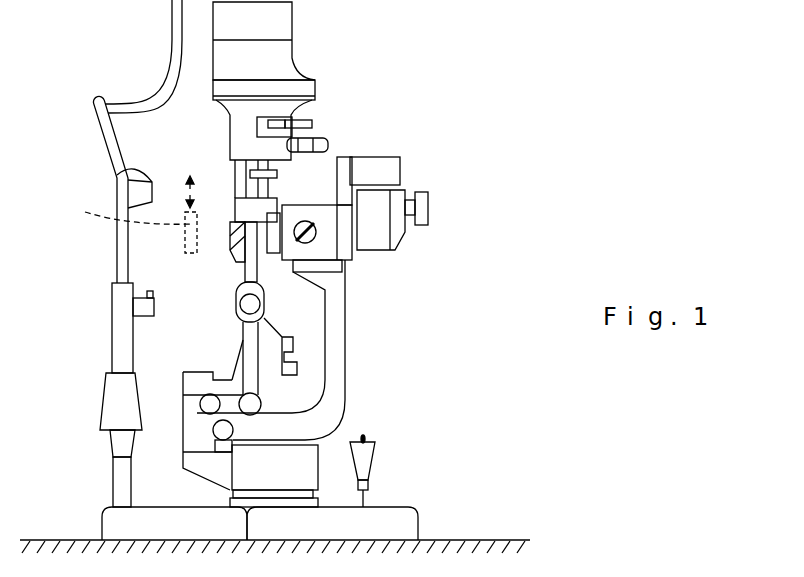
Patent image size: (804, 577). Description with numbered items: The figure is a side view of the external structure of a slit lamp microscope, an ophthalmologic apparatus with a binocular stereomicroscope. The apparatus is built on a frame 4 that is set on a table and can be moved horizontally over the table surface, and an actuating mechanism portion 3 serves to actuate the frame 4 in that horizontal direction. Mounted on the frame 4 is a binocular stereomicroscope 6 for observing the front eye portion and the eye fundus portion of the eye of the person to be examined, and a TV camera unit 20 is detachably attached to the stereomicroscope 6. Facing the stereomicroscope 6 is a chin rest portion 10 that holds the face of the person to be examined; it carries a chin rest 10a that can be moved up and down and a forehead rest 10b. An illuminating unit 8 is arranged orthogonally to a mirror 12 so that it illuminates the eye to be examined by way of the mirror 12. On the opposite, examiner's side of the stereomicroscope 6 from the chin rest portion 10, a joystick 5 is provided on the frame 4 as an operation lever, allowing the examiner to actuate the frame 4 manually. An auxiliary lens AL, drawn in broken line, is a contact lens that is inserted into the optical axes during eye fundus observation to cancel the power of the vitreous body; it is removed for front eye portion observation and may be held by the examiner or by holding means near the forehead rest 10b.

The actuating mechanism portion 3 is at (173, 510).
The frame 4 is at (400, 522).
The joystick 5 is at (360, 457).
The binocular stereomicroscope 6 is at (313, 198).
The illuminating unit 8 is at (226, 152).
The chin rest portion 10 is at (106, 306).
The chin rest 10a is at (148, 291).
The forehead rest 10b is at (115, 172).
The mirror 12 is at (235, 261).
The TV camera unit 20 is at (374, 150).
The auxiliary lens AL is at (117, 214).